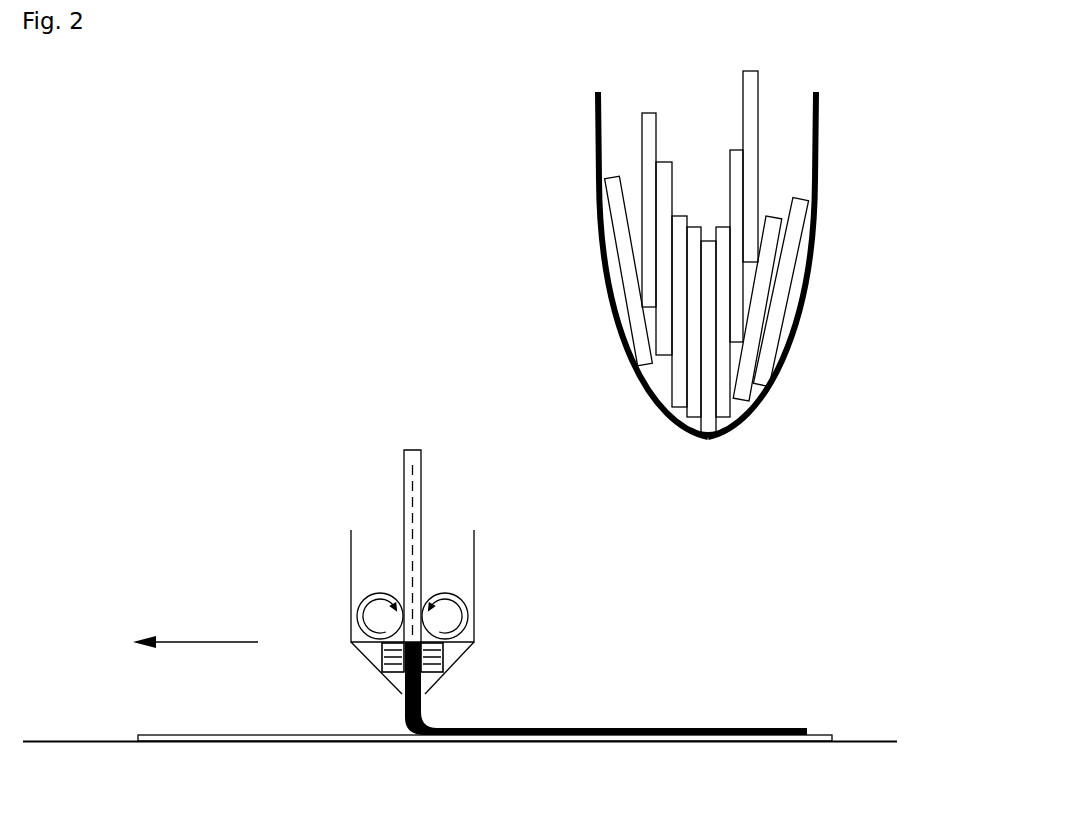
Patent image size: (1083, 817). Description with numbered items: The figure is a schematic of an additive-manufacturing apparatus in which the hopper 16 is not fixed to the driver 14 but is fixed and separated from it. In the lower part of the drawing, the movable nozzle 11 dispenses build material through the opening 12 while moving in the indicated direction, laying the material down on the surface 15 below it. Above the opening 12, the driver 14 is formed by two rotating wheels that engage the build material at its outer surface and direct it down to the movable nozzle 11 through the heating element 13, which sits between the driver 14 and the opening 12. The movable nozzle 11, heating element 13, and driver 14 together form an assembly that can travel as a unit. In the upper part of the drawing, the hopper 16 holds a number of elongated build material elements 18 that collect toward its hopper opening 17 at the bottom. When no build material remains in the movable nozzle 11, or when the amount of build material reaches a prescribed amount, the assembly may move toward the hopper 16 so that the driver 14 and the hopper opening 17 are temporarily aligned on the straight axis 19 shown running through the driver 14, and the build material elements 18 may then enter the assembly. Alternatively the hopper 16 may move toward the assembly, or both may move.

The movable nozzle 11 is at (402, 692).
The opening 12 is at (430, 698).
The heating element 13 is at (445, 648).
The driver 14 is at (458, 602).
The build platform 15 is at (460, 759).
The hopper 16 is at (815, 138).
The hopper opening 17 is at (712, 435).
The build material elements 18 is at (752, 82).
The straight axis 19 is at (412, 569).